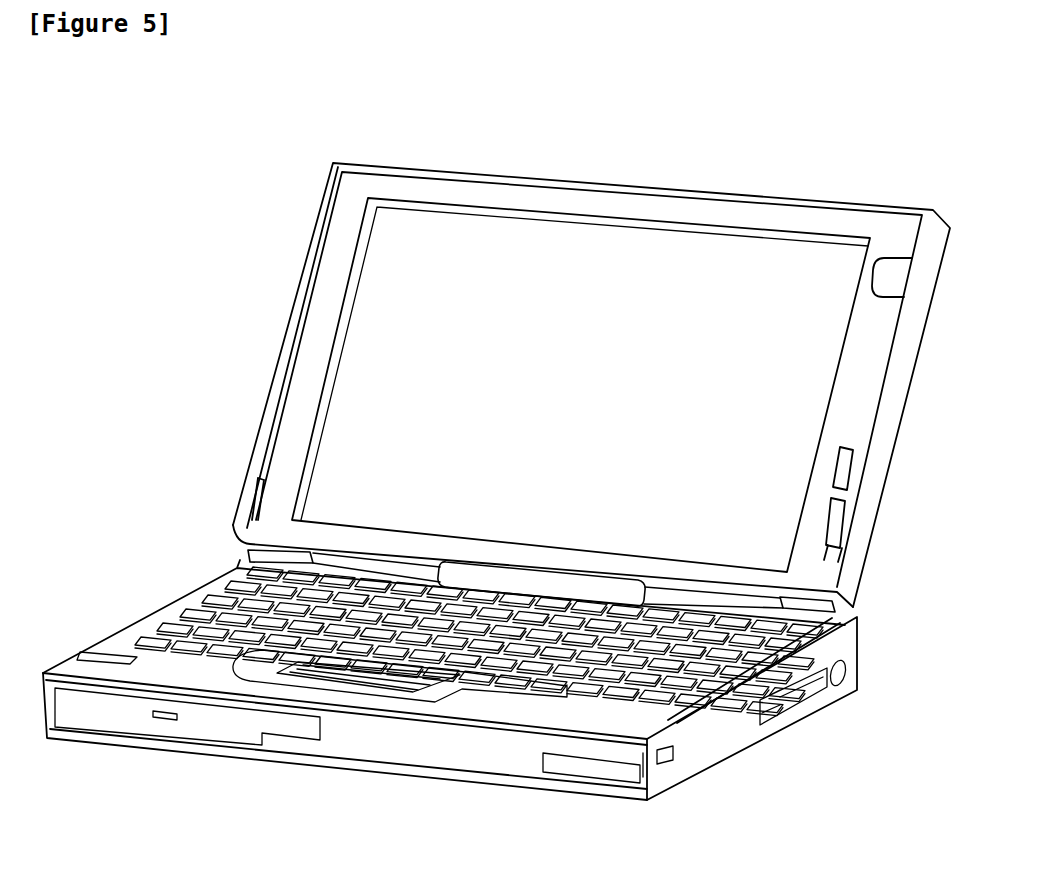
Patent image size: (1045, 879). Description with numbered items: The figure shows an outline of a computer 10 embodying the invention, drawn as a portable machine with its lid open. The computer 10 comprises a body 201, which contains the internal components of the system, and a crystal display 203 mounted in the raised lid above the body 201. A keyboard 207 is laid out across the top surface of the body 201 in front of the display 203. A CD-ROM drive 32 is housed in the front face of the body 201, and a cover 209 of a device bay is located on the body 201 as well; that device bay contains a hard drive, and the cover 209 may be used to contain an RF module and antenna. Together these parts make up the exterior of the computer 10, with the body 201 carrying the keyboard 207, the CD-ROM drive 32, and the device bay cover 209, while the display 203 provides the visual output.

The computer 10 is at (298, 268).
The body 201 is at (716, 777).
The crystal display 203 is at (649, 222).
The keyboard 207 is at (176, 598).
The CD-ROM drive 32 is at (212, 730).
The cover of a device bay 209 is at (598, 770).